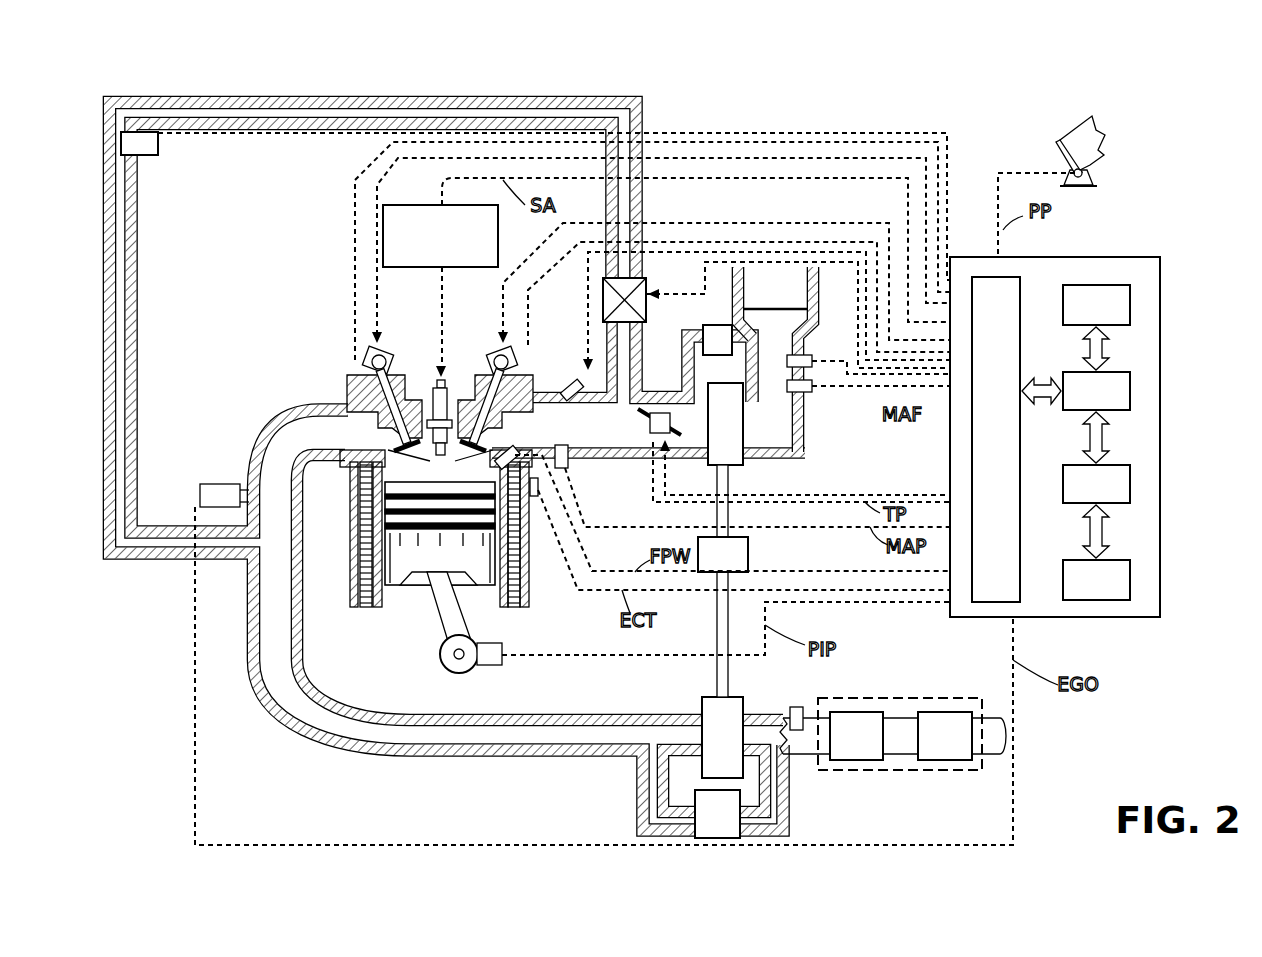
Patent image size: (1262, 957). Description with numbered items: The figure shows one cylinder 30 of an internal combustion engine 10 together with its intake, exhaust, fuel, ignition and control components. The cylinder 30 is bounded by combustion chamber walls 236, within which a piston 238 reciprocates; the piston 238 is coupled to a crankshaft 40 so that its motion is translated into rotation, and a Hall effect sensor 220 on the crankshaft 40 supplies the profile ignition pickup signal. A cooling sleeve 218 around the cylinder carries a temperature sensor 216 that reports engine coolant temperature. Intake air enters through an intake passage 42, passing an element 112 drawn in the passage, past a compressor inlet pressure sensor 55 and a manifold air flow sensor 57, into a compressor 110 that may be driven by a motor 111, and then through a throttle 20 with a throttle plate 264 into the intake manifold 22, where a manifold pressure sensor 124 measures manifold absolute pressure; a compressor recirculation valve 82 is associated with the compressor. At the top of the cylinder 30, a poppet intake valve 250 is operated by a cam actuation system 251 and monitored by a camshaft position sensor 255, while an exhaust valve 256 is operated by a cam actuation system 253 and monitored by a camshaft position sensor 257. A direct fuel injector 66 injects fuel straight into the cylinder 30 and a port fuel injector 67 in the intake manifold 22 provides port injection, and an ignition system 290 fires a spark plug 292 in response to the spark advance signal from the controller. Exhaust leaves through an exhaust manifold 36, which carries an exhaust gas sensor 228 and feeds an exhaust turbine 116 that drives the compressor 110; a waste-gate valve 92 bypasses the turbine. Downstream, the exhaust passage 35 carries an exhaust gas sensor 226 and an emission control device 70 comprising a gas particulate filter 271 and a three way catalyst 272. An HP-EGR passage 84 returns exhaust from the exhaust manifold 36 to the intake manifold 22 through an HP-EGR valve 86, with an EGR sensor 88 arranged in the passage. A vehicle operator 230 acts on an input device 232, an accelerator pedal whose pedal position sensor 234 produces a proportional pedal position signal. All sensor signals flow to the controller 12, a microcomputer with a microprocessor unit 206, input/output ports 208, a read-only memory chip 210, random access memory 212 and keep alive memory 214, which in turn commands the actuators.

The engine 10 is at (290, 331).
The controller 12 is at (1150, 257).
The throttle 20 is at (650, 424).
The intake manifold 22 is at (648, 387).
The cylinder 30 is at (358, 560).
The exhaust passage 35 is at (793, 757).
The exhaust manifold 36 is at (540, 569).
The crankshaft 40 is at (448, 670).
The intake passage 42 is at (775, 359).
The compressor inlet pressure sensor 55 is at (812, 357).
The manifold air flow sensor 57 is at (810, 393).
The direct fuel injector 66 is at (503, 455).
The port fuel injector 67 is at (575, 382).
The emission control device 70 is at (938, 698).
The compressor recirculation valve 82 is at (720, 325).
The HP-EGR passage 84 is at (505, 97).
The HP-EGR valve 86 is at (603, 302).
The EGR sensor 88 is at (158, 157).
The waste-gate valve 92 is at (714, 794).
The compressor 110 is at (725, 540).
The motor 111 is at (723, 554).
The air filter 112 is at (806, 313).
The exhaust turbine 116 is at (722, 737).
The MAP sensor 124 is at (568, 460).
The microprocessor unit 206 is at (1130, 390).
The input/output ports 208 is at (1022, 287).
The read-only memory chip 210 is at (1130, 302).
The random access memory 212 is at (1130, 482).
The keep alive memory 214 is at (1130, 578).
The temperature sensor 216 is at (545, 550).
The cooling sleeve 218 is at (527, 590).
The Hall effect sensor 220 is at (494, 666).
The exhaust gas sensor 226 is at (798, 707).
The exhaust gas sensor 228 is at (200, 488).
The vehicle operator 230 is at (1060, 150).
The input device 232 is at (1108, 142).
The pedal position sensor 234 is at (1090, 178).
The combustion chamber walls 236 is at (382, 607).
The piston 238 is at (425, 560).
The intake valve 250 is at (449, 440).
The cam actuation system 251 is at (490, 333).
The cam actuation system 253 is at (395, 332).
The camshaft position sensor 255 is at (520, 355).
The exhaust valve 256 is at (400, 445).
The camshaft position sensor 257 is at (367, 362).
The throttle plate 264 is at (644, 407).
The gas particulate filter 271 is at (856, 736).
The three way catalyst 272 is at (945, 736).
The ignition system 290 is at (430, 205).
The spark plug 292 is at (437, 405).